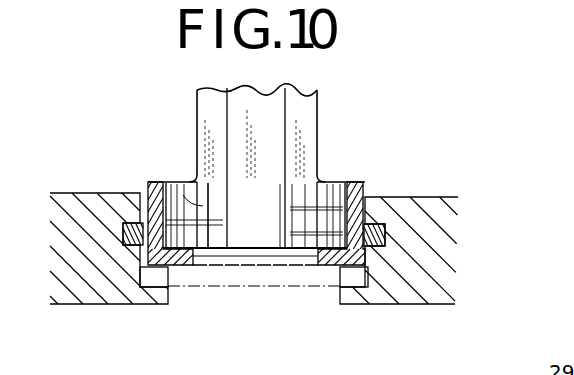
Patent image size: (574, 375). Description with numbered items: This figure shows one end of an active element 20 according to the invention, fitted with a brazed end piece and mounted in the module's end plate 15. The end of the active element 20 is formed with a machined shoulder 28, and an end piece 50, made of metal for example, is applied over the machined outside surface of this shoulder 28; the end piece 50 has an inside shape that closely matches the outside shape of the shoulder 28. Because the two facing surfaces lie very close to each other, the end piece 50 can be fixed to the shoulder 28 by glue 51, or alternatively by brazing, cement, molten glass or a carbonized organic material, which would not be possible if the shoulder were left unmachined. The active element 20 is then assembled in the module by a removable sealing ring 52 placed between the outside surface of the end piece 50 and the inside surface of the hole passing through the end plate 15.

The end plate 15 is at (393, 273).
The active element 20 is at (245, 103).
The shoulder 28 is at (183, 182).
The end piece 50 is at (280, 191).
The glue 51 is at (345, 182).
The removable sealing ring 52 is at (380, 222).